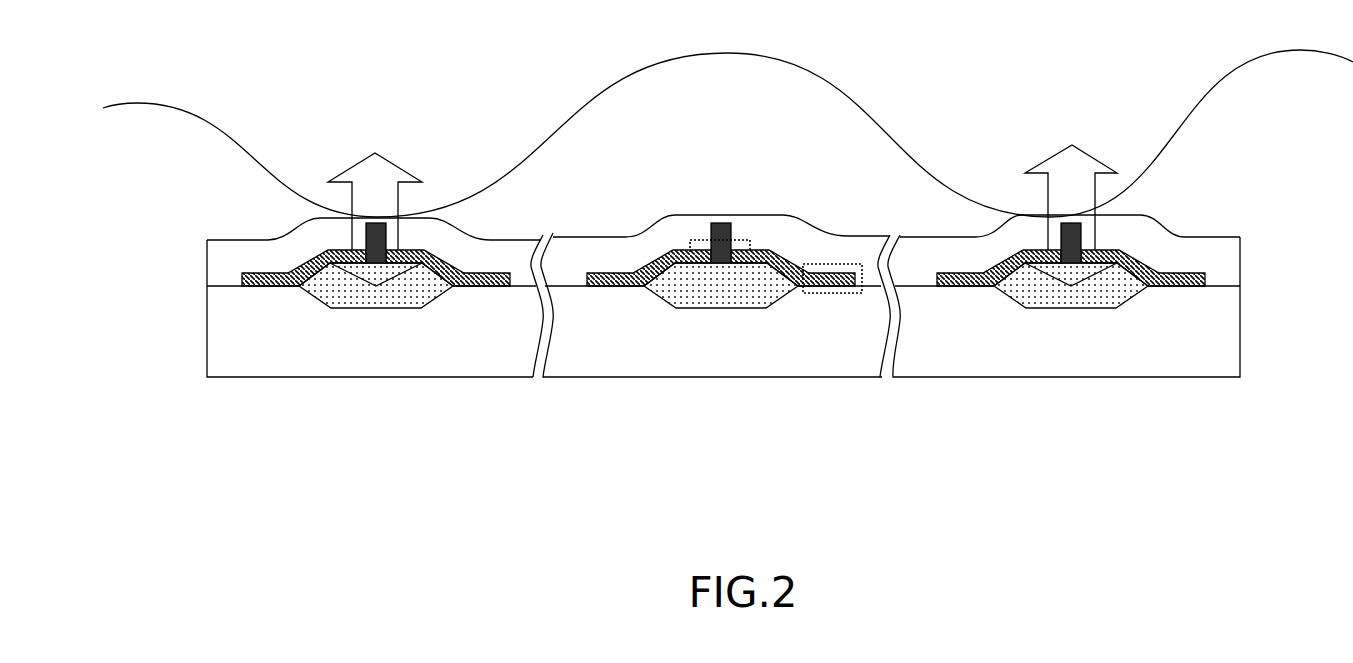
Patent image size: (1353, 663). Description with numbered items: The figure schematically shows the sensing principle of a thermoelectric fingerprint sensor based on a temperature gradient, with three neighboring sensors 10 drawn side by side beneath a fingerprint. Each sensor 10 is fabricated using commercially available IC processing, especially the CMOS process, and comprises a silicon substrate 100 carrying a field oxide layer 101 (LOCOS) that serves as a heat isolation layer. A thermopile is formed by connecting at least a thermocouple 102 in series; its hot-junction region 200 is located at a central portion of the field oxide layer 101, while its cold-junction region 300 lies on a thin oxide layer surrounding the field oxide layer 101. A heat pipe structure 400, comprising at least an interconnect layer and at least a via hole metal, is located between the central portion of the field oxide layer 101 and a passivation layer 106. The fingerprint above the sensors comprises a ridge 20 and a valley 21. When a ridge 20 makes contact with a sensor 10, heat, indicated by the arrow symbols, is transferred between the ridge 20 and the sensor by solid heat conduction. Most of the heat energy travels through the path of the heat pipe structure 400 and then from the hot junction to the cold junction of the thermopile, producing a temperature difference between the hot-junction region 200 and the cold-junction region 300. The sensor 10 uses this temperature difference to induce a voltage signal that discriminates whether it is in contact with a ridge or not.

The sensor 10 is at (723, 307).
The ridge 20 is at (352, 137).
The valley 21 is at (743, 38).
The silicon substrate 100 is at (355, 360).
The field oxide layer 101 is at (753, 302).
The thermocouple 102 is at (641, 290).
The passivation layer 106 is at (723, 222).
The hot-junction region 200 is at (738, 243).
The cold-junction region 300 is at (838, 263).
The heat pipe structure 400 is at (693, 238).